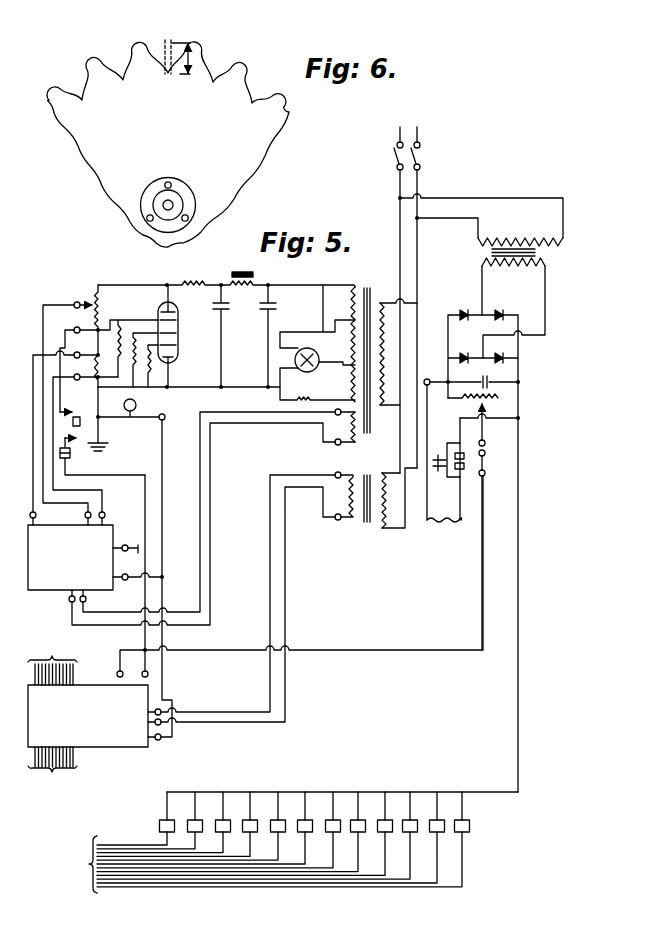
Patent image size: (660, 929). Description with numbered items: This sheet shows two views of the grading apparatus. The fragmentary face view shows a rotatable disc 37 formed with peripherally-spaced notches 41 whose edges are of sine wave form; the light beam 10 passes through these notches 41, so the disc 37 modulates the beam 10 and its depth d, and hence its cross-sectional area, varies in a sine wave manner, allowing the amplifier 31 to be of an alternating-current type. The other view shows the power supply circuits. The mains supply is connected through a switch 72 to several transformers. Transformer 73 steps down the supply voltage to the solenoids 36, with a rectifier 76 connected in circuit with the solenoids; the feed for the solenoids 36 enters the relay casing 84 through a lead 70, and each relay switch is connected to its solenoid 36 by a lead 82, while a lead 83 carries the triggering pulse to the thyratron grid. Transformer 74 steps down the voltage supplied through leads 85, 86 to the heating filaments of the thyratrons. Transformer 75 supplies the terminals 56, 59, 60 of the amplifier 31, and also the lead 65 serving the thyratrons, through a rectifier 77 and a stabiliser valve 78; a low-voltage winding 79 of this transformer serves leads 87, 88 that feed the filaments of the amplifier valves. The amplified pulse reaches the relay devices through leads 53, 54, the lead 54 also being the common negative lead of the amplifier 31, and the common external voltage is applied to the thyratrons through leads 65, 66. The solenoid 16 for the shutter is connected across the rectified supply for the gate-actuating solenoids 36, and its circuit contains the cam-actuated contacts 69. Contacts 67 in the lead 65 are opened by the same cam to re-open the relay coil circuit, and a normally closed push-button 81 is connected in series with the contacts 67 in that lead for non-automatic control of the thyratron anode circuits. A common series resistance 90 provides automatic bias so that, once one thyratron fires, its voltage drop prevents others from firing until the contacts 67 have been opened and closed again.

In FIG. 6, the light beam 10 is at (176, 44).
In FIG. 6, the notches 41 is at (116, 66).
In FIG. 6, the rotatable disc 37 is at (168, 132).
In FIG. 5, the switch 72 is at (395, 152).
In FIG. 5, the transformer 73 is at (490, 250).
In FIG. 5, the transformer 75 is at (366, 288).
In FIG. 5, the rectifier 76 is at (502, 343).
In FIG. 5, the rectifier 77 is at (294, 359).
In FIG. 5, the stabiliser valve 78 is at (180, 322).
In FIG. 5, the low-voltage winding 79 is at (352, 424).
In FIG. 5, the transformer 74 is at (368, 529).
In FIG. 5, the solenoid 16 is at (445, 474).
In FIG. 5, the series resistance 90 is at (439, 452).
In FIG. 5, the contacts 69 is at (467, 465).
In FIG. 5, the push-button 81 is at (80, 434).
In FIG. 5, the contacts 67 is at (72, 456).
In FIG. 5, the lead 87 is at (200, 483).
In FIG. 5, the lead 88 is at (210, 483).
In FIG. 5, the terminal 56 is at (104, 515).
In FIG. 5, the terminal 59 is at (36, 522).
In FIG. 5, the terminal 60 is at (86, 520).
In FIG. 5, the lead 53 is at (128, 539).
In FIG. 5, the lead 54 is at (137, 579).
In FIG. 5, the amplifier 31 is at (95, 568).
In FIG. 5, the lead 65 is at (147, 538).
In FIG. 5, the lead 66 is at (165, 681).
In FIG. 5, the lead 70 is at (229, 652).
In FIG. 5, the lead 85 is at (270, 575).
In FIG. 5, the lead 86 is at (286, 579).
In FIG. 5, the lead 82 is at (55, 657).
In FIG. 5, the lead 83 is at (55, 773).
In FIG. 5, the casing 84 is at (94, 730).
In FIG. 5, the solenoid 36 is at (159, 826).